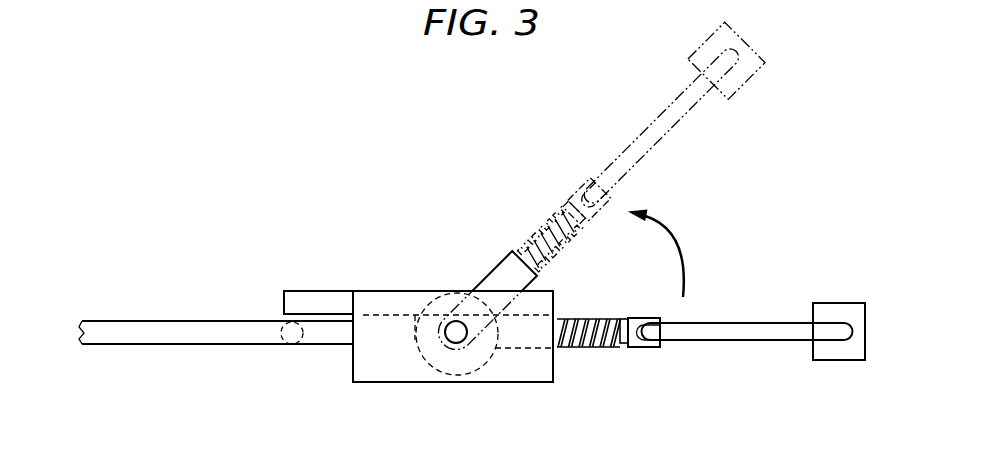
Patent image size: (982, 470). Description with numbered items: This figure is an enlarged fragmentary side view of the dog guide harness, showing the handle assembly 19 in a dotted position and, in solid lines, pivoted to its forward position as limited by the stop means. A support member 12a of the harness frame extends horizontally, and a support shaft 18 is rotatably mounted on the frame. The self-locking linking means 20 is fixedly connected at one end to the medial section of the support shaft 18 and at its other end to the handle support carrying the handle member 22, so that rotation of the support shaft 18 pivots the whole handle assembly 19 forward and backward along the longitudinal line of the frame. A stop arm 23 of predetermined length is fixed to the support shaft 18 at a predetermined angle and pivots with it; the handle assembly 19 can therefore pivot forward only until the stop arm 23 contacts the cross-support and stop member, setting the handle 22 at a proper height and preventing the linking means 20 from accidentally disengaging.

The support member 12a is at (182, 337).
The support shaft member 18 is at (451, 344).
The handle assembly 19 is at (761, 320).
The self-locking linking means 20 is at (486, 266).
The handle member 22 is at (833, 350).
The stop arm 23 is at (315, 298).